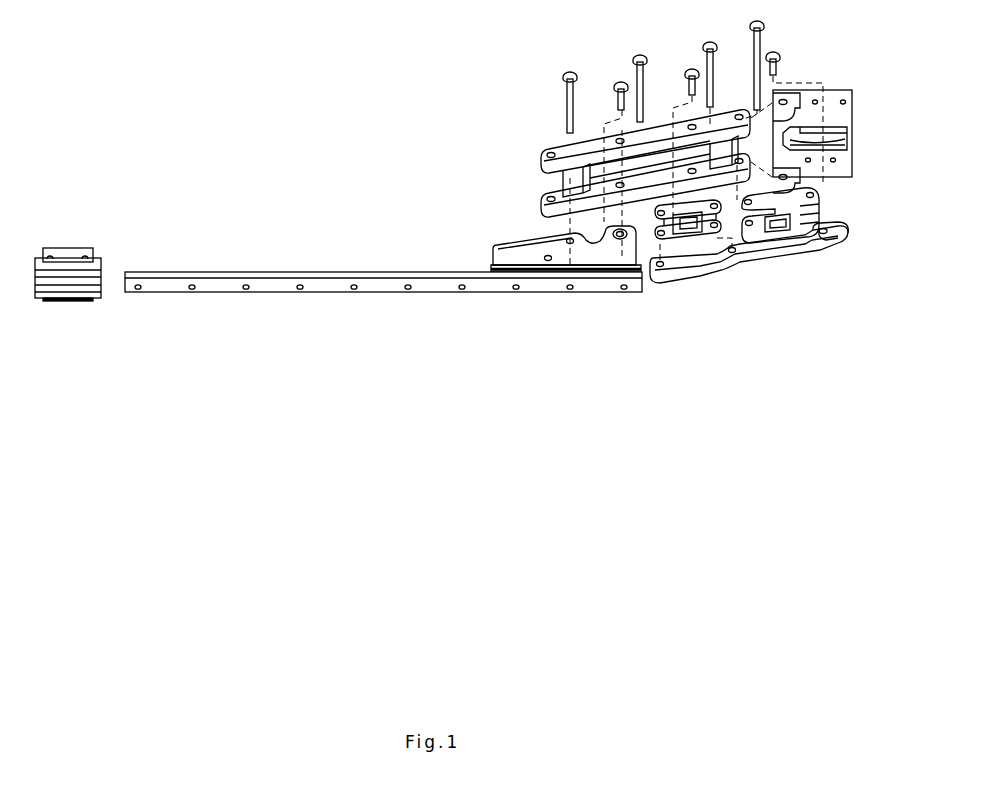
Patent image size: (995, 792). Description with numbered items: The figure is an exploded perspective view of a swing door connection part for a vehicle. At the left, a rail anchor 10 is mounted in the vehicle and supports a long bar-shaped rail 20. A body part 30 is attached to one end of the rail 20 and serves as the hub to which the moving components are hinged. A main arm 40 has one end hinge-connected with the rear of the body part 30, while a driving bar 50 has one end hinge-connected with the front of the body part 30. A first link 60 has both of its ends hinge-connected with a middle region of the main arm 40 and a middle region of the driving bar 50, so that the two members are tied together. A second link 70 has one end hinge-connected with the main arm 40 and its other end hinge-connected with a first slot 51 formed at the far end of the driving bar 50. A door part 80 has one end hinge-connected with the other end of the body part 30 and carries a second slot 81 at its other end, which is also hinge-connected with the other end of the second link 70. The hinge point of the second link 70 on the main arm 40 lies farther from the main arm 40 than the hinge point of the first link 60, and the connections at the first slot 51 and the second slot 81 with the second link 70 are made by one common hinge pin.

The rail anchor 10 is at (77, 300).
The rail 20 is at (330, 296).
The body part 30 is at (500, 246).
The main arm 40 is at (543, 158).
The driving bar 50 is at (727, 277).
The first slot 51 is at (838, 241).
The first link 60 is at (686, 238).
The second link 70 is at (816, 207).
The door part 80 is at (828, 88).
The second slot 81 is at (838, 142).